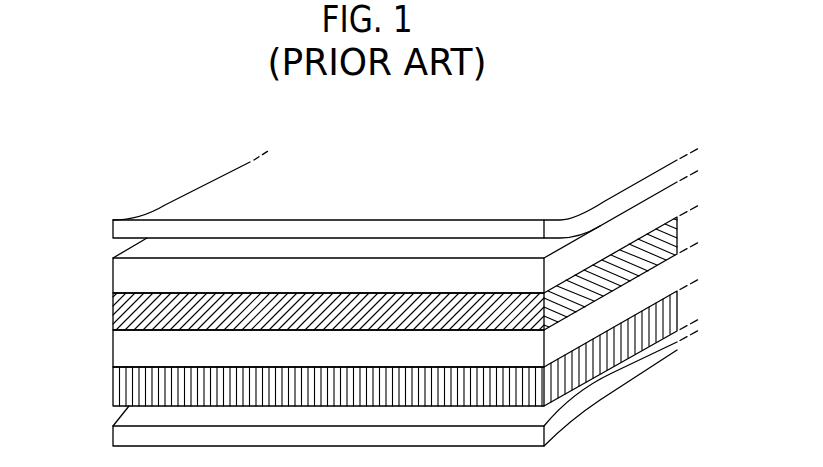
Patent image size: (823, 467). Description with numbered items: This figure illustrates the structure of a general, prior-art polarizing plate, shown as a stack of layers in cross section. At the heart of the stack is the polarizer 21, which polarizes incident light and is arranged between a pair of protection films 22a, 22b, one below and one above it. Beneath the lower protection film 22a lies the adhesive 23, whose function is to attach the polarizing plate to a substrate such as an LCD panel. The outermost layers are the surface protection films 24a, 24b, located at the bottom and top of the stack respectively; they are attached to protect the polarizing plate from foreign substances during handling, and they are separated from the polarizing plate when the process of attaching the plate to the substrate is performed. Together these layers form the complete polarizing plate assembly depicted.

The polarizer 21 is at (118, 311).
The protection film 22a is at (118, 348).
The protection film 22b is at (118, 276).
The adhesive 23 is at (120, 384).
The surface protection film 24a is at (118, 435).
The surface protection film 24b is at (118, 229).